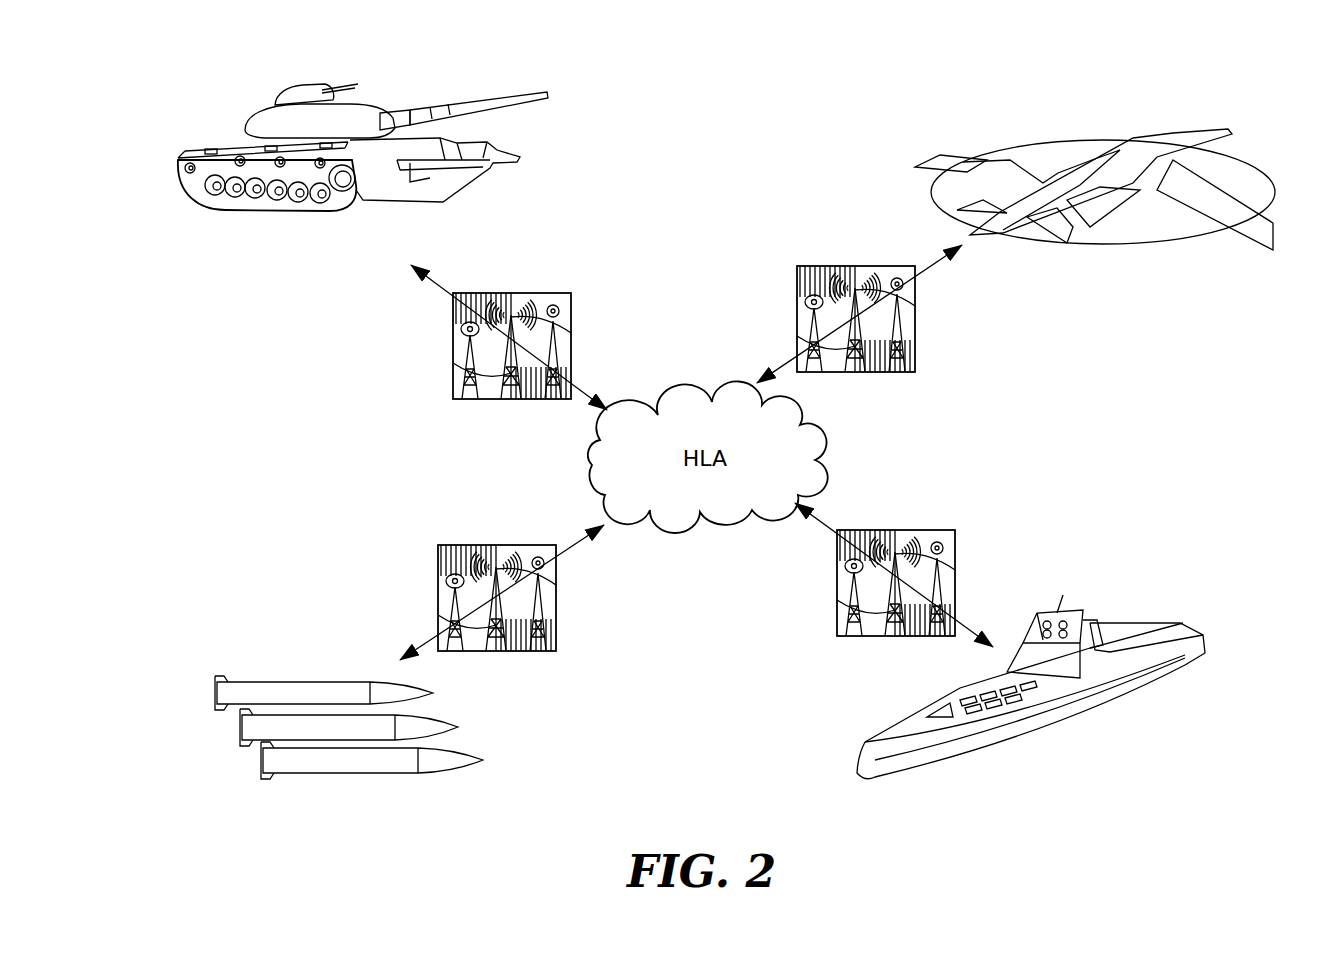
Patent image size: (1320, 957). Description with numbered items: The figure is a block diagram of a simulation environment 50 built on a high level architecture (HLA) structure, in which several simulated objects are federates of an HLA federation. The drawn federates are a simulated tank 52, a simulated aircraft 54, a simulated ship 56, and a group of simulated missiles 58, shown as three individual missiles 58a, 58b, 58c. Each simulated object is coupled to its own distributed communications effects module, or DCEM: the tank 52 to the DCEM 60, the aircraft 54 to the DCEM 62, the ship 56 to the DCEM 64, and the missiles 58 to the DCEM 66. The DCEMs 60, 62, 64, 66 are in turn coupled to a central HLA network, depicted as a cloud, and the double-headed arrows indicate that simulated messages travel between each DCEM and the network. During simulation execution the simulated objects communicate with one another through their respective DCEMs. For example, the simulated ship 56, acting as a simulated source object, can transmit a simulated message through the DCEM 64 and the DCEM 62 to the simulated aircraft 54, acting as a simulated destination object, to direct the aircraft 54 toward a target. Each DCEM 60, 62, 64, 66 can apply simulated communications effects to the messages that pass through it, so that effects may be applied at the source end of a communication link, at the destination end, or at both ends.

The simulation environment 50 is at (694, 116).
The simulated tank 52 is at (255, 118).
The simulated aircraft 54 is at (1165, 128).
The simulated ship 56 is at (1163, 622).
The simulated missiles 58 is at (195, 683).
The simulated missile 58a is at (433, 693).
The simulated missile 58b is at (458, 727).
The simulated missile 58c is at (483, 760).
The distributed communications effects module 60 is at (453, 357).
The distributed communications effects module 62 is at (797, 312).
The distributed communications effects module 64 is at (837, 582).
The distributed communications effects module 66 is at (557, 597).